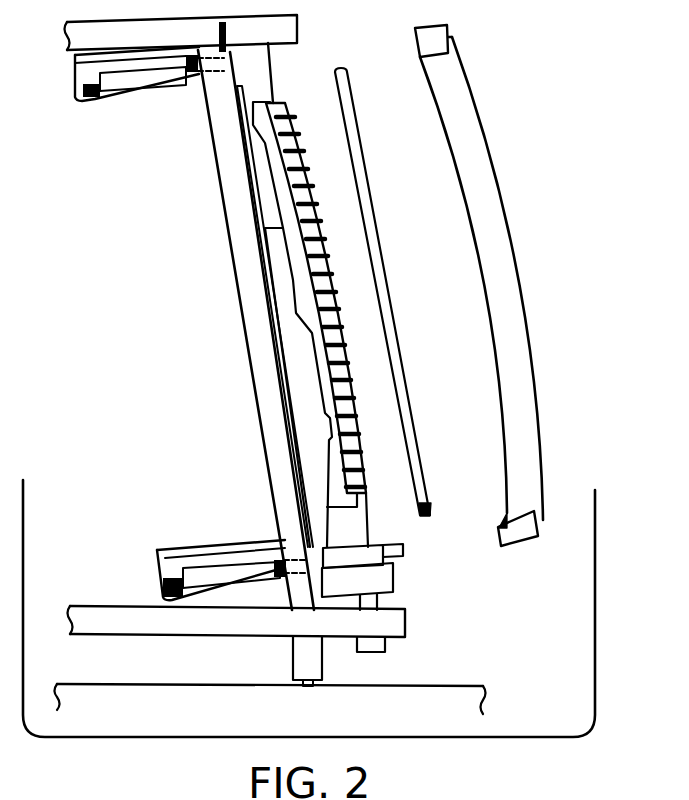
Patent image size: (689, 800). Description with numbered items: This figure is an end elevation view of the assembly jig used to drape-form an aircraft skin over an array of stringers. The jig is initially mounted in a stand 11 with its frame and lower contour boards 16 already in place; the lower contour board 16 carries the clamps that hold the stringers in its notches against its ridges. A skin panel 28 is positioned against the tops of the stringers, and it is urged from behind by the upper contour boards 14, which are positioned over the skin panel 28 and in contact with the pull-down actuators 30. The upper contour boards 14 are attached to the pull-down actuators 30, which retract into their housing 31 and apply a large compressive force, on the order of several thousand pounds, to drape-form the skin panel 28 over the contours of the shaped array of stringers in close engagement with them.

The stand 11 is at (437, 645).
The upper contour boards 14 is at (503, 287).
The lower contour boards 16 is at (300, 262).
The skin panel 28 is at (391, 311).
The pull-down actuators 30 is at (423, 562).
The housing 31 is at (236, 578).